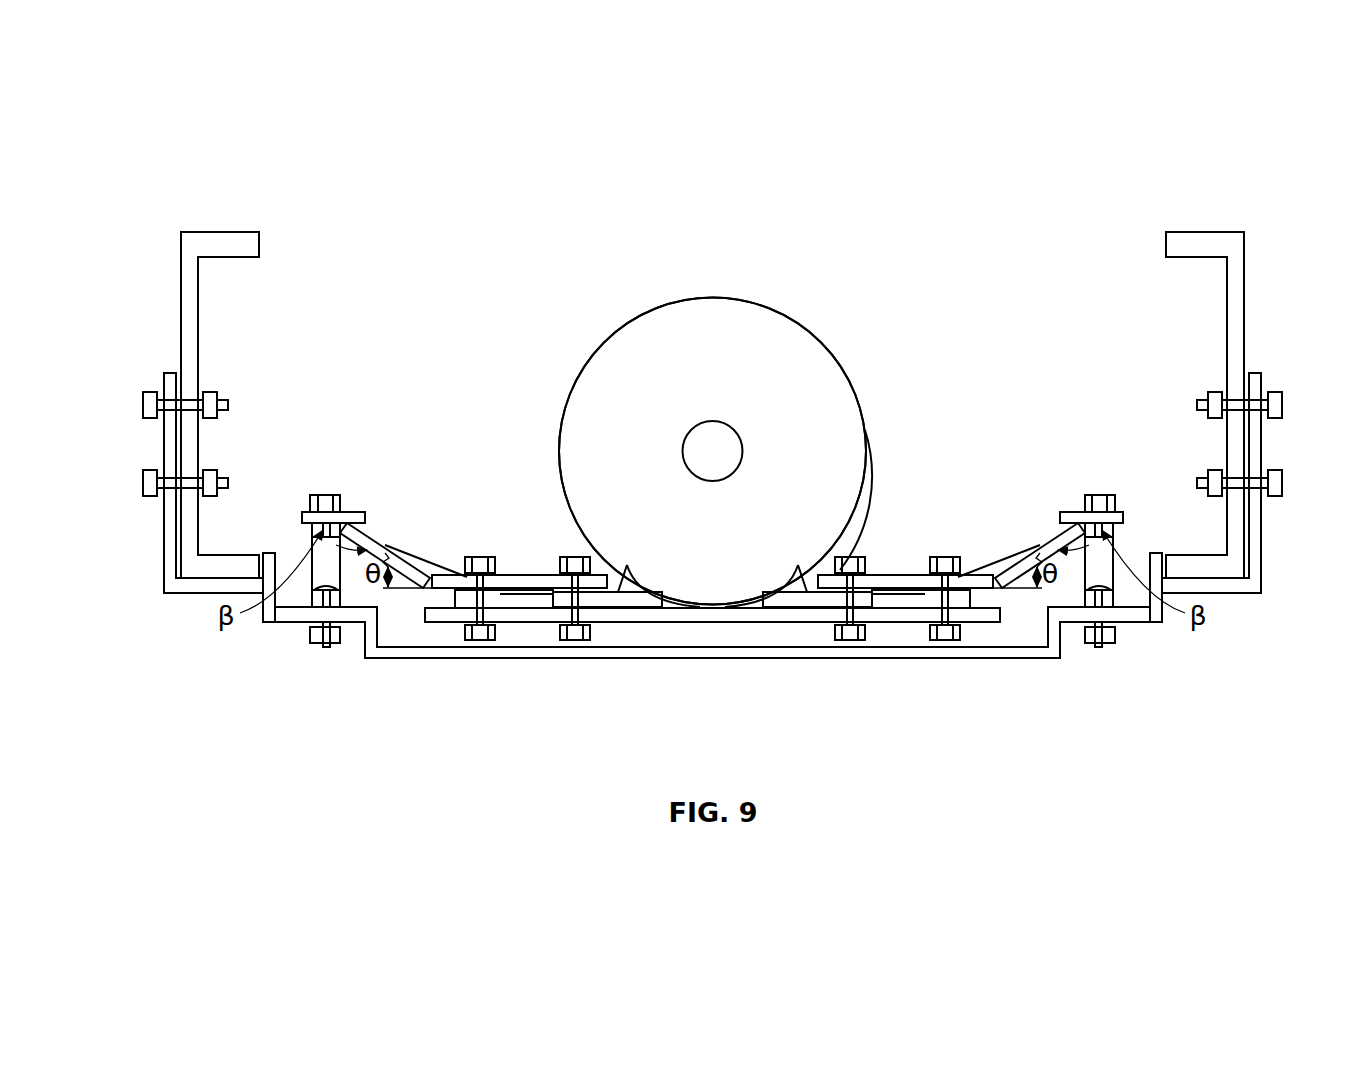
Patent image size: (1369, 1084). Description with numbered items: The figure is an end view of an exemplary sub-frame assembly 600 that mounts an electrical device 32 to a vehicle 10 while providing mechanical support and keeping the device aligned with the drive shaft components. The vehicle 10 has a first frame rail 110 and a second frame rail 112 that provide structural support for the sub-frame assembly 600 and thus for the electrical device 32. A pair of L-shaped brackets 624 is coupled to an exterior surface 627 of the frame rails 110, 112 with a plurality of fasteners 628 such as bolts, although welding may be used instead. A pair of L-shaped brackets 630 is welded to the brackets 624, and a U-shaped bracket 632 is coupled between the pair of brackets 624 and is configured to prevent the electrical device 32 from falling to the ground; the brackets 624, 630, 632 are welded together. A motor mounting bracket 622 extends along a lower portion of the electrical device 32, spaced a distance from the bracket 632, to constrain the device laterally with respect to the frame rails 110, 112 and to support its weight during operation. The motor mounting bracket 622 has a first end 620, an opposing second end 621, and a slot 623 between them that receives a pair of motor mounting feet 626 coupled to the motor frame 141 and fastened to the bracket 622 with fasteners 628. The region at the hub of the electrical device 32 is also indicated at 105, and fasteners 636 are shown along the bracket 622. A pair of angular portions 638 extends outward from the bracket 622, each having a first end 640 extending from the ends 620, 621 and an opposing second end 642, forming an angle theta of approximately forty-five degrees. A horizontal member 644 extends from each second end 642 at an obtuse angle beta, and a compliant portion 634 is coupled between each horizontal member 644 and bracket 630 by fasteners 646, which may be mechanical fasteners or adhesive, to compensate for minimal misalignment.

The sub-frame assembly 600 is at (203, 142).
The vehicle 10 is at (1015, 200).
The first frame rail 110 is at (220, 240).
The second frame rail 112 is at (1208, 240).
The exterior surface 627 is at (181, 273).
The fasteners 628 is at (143, 405).
The bracket 624 is at (165, 570).
The bracket 630 is at (282, 622).
The bracket 632 is at (820, 658).
The compliant portion 634 is at (320, 580).
The fasteners 636 is at (945, 632).
The angular portion 638 is at (400, 548).
The first end 640 is at (440, 577).
The second end 642 is at (350, 524).
The horizontal member 644 is at (303, 517).
The fasteners 646 is at (325, 497).
The first end 620 is at (440, 618).
The second end 621 is at (972, 612).
The motor mounting bracket 622 is at (525, 626).
The slot 623 is at (510, 596).
The motor mounting feet 626 is at (625, 583).
The electrical device 32 is at (842, 380).
The hub opening 105 is at (712, 420).
The motor frame 141 is at (862, 417).